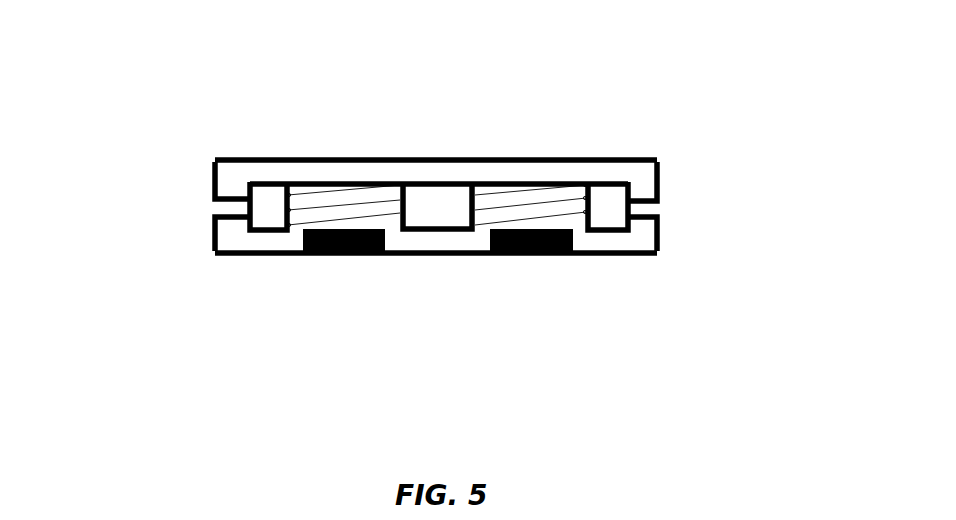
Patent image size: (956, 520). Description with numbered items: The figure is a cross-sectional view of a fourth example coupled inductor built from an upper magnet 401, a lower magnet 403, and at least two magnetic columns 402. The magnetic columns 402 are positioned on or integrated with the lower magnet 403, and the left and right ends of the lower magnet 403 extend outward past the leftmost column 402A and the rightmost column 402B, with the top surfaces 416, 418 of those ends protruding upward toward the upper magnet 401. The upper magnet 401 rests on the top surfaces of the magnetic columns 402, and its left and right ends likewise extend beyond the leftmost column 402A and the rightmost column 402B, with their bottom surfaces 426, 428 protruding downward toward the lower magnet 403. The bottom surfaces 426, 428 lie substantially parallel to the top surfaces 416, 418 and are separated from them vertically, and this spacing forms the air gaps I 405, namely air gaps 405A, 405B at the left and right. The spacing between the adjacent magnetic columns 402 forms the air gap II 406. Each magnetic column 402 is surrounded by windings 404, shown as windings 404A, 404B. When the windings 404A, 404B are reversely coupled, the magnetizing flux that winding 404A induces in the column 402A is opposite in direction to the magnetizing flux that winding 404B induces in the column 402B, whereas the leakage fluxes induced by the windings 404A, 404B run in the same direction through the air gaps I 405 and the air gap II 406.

The upper magnet 401 is at (413, 175).
The magnetic columns 402 is at (415, 292).
The leftmost column 402A is at (307, 213).
The rightmost column 402B is at (575, 215).
The lower magnet 403 is at (426, 239).
The windings 404 is at (438, 117).
The winding 404A is at (363, 202).
The winding 404B is at (523, 204).
The air gaps I 405 is at (420, 247).
The air gap I 405A is at (237, 208).
The air gap I 405B is at (790, 313).
The air gaps II 406 is at (452, 215).
The top surface 416 is at (222, 213).
The top surface 418 is at (658, 212).
The bottom surface 426 is at (233, 196).
The bottom surface 428 is at (642, 208).